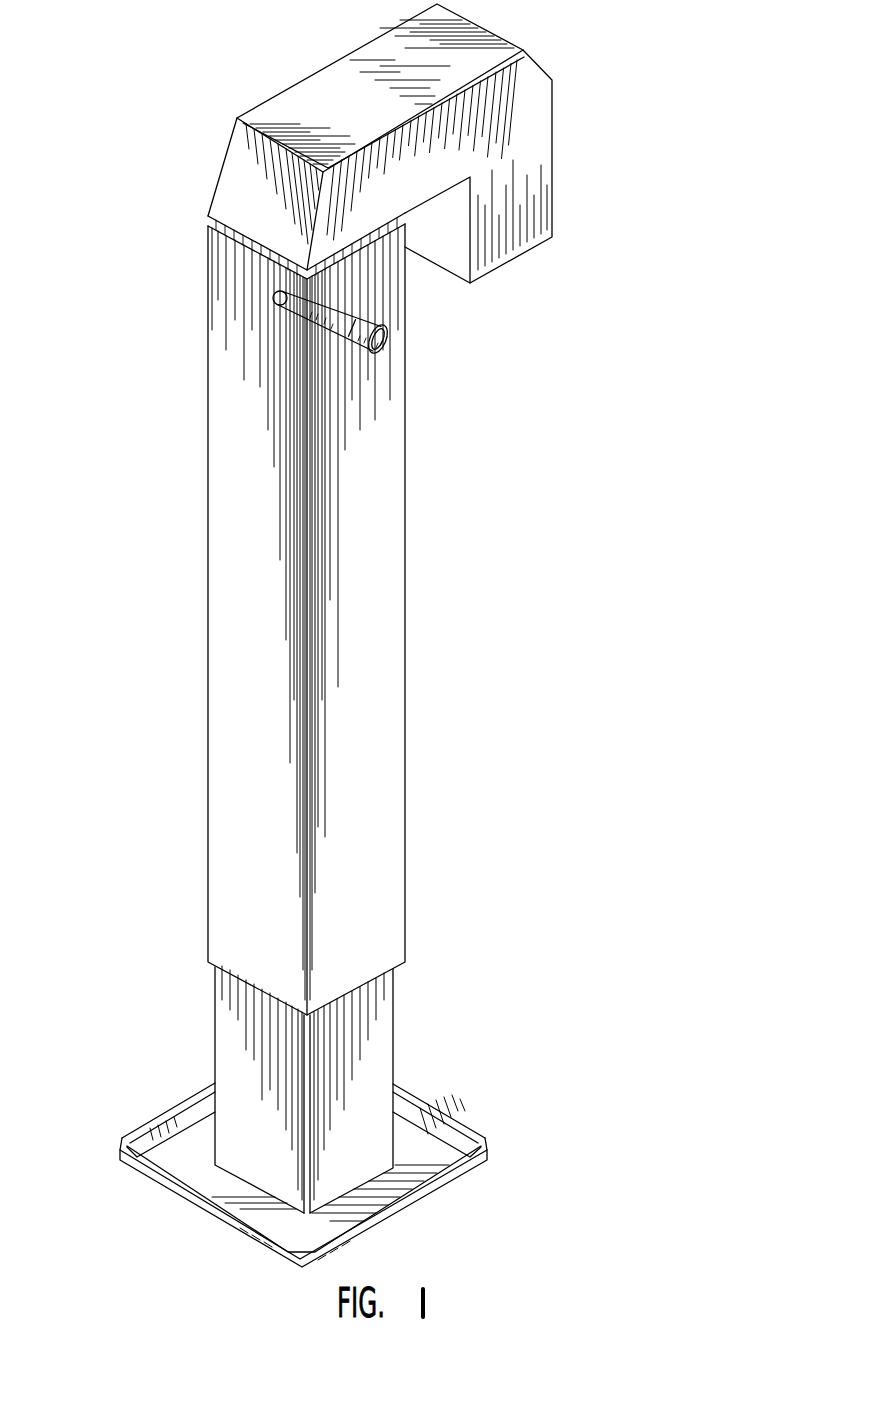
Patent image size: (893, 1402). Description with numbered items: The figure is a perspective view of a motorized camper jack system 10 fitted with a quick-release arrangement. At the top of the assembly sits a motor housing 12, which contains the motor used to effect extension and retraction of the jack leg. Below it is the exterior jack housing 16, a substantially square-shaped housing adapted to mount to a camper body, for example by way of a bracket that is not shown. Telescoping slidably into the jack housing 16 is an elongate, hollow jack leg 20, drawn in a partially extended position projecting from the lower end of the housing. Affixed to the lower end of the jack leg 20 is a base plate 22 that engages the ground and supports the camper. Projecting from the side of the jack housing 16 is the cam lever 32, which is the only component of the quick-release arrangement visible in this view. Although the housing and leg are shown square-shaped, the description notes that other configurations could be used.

The motorized camper jack system 10 is at (175, 88).
The motor housing 12 is at (517, 130).
The exterior jack housing 16 is at (378, 543).
The jack leg 20 is at (370, 1062).
The base plate 22 is at (430, 1157).
The cam lever 32 is at (355, 315).